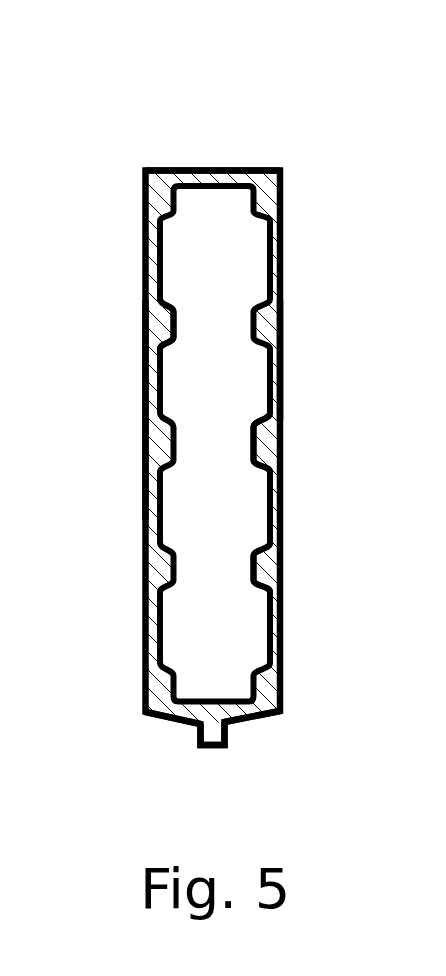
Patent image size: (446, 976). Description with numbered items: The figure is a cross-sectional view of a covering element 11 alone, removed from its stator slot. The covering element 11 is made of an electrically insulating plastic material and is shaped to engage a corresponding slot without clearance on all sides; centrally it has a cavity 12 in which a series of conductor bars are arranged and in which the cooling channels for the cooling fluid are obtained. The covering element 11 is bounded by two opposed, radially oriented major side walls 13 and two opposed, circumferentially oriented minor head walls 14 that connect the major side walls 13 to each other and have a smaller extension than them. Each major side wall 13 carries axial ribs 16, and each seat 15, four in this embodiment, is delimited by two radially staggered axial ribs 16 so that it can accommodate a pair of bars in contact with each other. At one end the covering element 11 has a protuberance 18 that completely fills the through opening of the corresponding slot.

The covering element 11 is at (128, 143).
The cavity 12 is at (270, 444).
The major side wall 13 is at (270, 375).
The minor head wall 14 is at (210, 177).
The seat 15 is at (252, 244).
The axial rib 16 is at (162, 316).
The protuberance 18 is at (202, 743).